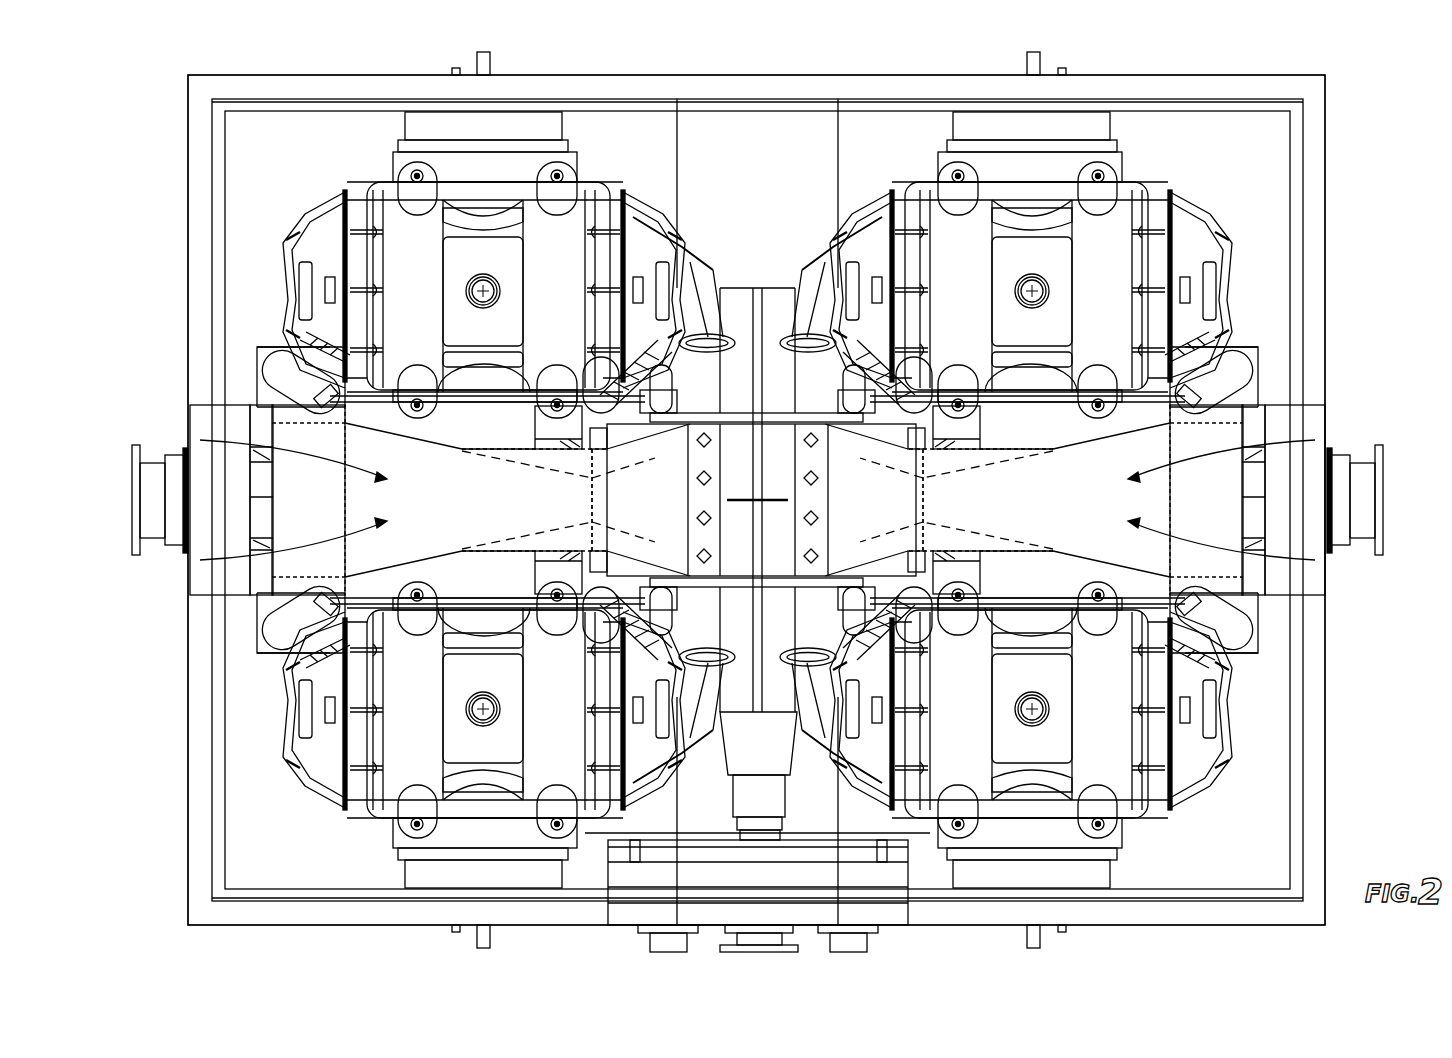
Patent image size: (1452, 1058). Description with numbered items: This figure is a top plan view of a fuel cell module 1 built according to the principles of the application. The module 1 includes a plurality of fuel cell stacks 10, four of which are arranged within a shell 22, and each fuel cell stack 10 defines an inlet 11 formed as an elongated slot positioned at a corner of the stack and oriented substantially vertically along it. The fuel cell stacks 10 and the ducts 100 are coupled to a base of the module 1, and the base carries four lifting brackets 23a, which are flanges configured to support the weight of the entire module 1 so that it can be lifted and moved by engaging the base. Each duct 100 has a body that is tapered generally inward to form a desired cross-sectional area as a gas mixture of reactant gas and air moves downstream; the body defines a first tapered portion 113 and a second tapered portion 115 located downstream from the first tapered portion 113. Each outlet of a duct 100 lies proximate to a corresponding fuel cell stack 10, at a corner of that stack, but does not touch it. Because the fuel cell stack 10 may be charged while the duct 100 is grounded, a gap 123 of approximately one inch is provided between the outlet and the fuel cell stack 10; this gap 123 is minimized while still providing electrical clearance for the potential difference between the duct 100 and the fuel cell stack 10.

The fuel cell module 1 is at (130, 82).
The fuel cell stack 10 is at (1110, 727).
The inlet 11 is at (1190, 600).
The shell 22 is at (1313, 167).
The lifting bracket 23a is at (1040, 940).
The duct 100 is at (1128, 498).
The first tapered portion 113 is at (848, 466).
The second tapered portion 115 is at (1120, 462).
The gap 123 is at (1190, 580).